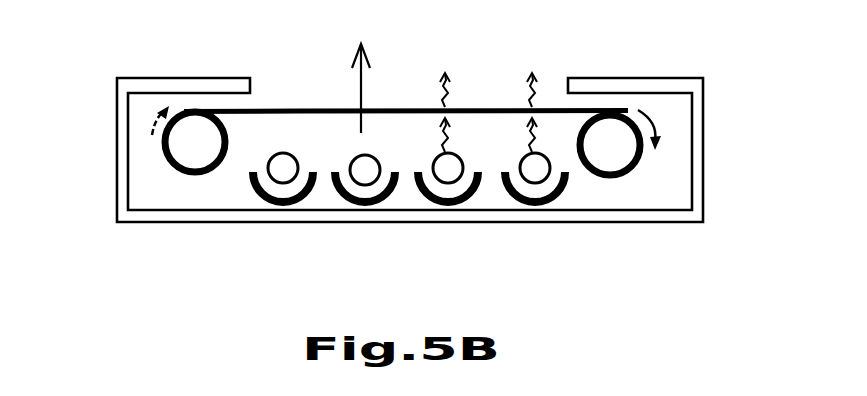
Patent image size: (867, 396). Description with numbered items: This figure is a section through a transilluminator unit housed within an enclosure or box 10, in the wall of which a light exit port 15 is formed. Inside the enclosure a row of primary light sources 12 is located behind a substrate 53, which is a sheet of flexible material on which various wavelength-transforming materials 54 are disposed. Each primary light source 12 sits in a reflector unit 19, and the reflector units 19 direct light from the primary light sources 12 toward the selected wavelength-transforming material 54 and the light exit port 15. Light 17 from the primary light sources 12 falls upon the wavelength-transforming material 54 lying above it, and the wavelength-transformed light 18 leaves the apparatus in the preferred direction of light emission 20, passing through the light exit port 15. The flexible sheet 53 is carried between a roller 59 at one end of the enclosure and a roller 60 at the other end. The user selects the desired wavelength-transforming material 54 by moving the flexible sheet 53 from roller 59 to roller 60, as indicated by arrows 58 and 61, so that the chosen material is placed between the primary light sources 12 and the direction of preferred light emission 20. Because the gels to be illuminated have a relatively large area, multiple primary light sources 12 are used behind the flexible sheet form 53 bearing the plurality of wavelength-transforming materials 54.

The enclosure or box 10 is at (410, 158).
The primary light source 12 is at (445, 168).
The light exit port 15 is at (558, 78).
The light from the primary light source 17 is at (452, 140).
The wavelength-transformed light 18 is at (488, 72).
The reflector unit 19 is at (500, 197).
The preferred direction of light emission 20 is at (361, 73).
The substrate 53 is at (263, 111).
The wavelength-transforming materials 54 is at (290, 110).
The arrow 58 is at (148, 117).
The roller 59 is at (180, 143).
The roller 60 is at (610, 147).
The arrow 61 is at (657, 122).